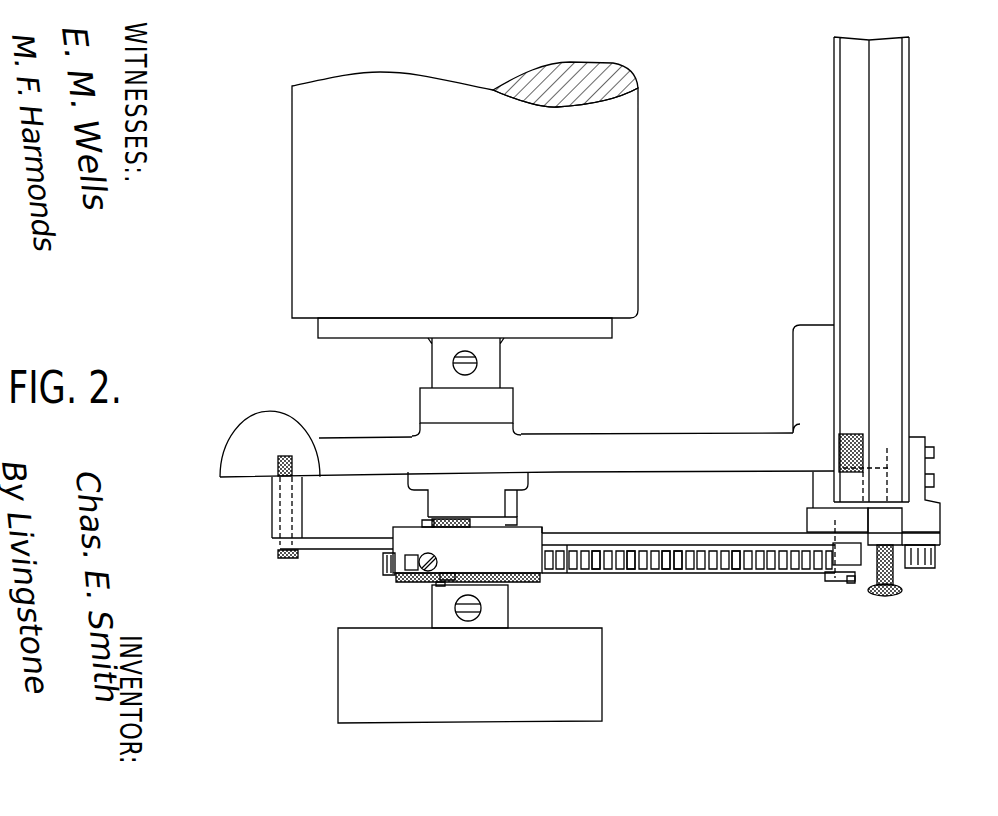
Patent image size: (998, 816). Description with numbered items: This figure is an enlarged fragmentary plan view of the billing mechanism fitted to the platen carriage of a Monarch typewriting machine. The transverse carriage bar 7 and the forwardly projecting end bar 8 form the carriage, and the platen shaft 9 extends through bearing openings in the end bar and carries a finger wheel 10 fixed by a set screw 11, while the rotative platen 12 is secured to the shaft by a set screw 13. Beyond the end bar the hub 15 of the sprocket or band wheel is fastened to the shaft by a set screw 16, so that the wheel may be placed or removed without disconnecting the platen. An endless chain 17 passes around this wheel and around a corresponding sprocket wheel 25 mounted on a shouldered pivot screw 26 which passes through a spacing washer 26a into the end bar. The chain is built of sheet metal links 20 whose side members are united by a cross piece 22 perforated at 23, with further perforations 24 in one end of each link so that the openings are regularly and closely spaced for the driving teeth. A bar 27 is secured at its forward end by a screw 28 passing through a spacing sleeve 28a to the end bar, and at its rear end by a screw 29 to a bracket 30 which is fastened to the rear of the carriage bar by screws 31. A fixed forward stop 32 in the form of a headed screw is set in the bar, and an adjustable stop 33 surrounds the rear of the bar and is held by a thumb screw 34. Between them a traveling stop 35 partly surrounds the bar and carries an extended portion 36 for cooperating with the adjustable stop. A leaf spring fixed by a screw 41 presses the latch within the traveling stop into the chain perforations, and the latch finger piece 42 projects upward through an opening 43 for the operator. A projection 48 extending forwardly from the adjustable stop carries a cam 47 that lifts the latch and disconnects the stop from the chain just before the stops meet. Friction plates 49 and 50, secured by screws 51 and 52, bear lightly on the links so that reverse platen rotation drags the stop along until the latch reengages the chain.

The transverse carriage bar 7 is at (905, 330).
The end bar 8 is at (527, 432).
The platen shaft 9 is at (478, 585).
The finger wheel 10 is at (470, 675).
The set screw 11 is at (468, 622).
The platen 12 is at (465, 200).
The set screw 13 is at (471, 359).
The hub 15 is at (506, 520).
The set screw 16 is at (472, 521).
The chain 17 is at (741, 563).
The sheet metal link 20 is at (616, 574).
The cross piece 22 is at (733, 574).
The perforation 23 is at (686, 553).
The perforation 24 is at (643, 551).
The sprocket wheel 25 is at (809, 518).
The pivot screw 26 is at (836, 583).
The spacing washer 26a is at (815, 489).
The bar 27 is at (596, 545).
The screw 28 is at (286, 558).
The spacing sleeve 28a is at (272, 522).
The screw 29 is at (937, 546).
The bracket 30 is at (935, 527).
The screw 31 is at (928, 482).
The forward stop 32 is at (385, 553).
The adjustable stop 33 is at (837, 520).
The thumb screw 34 is at (893, 594).
The traveling stop 35 is at (467, 554).
The extended portion 36 is at (546, 533).
The screw 41 is at (443, 553).
The finger piece 42 is at (411, 555).
The opening 43 is at (390, 577).
The cam 47 is at (847, 554).
The projection 48 is at (851, 585).
The friction plate 49 is at (447, 565).
The friction plate 50 is at (452, 513).
The screw 51 is at (440, 586).
The screw 52 is at (426, 521).